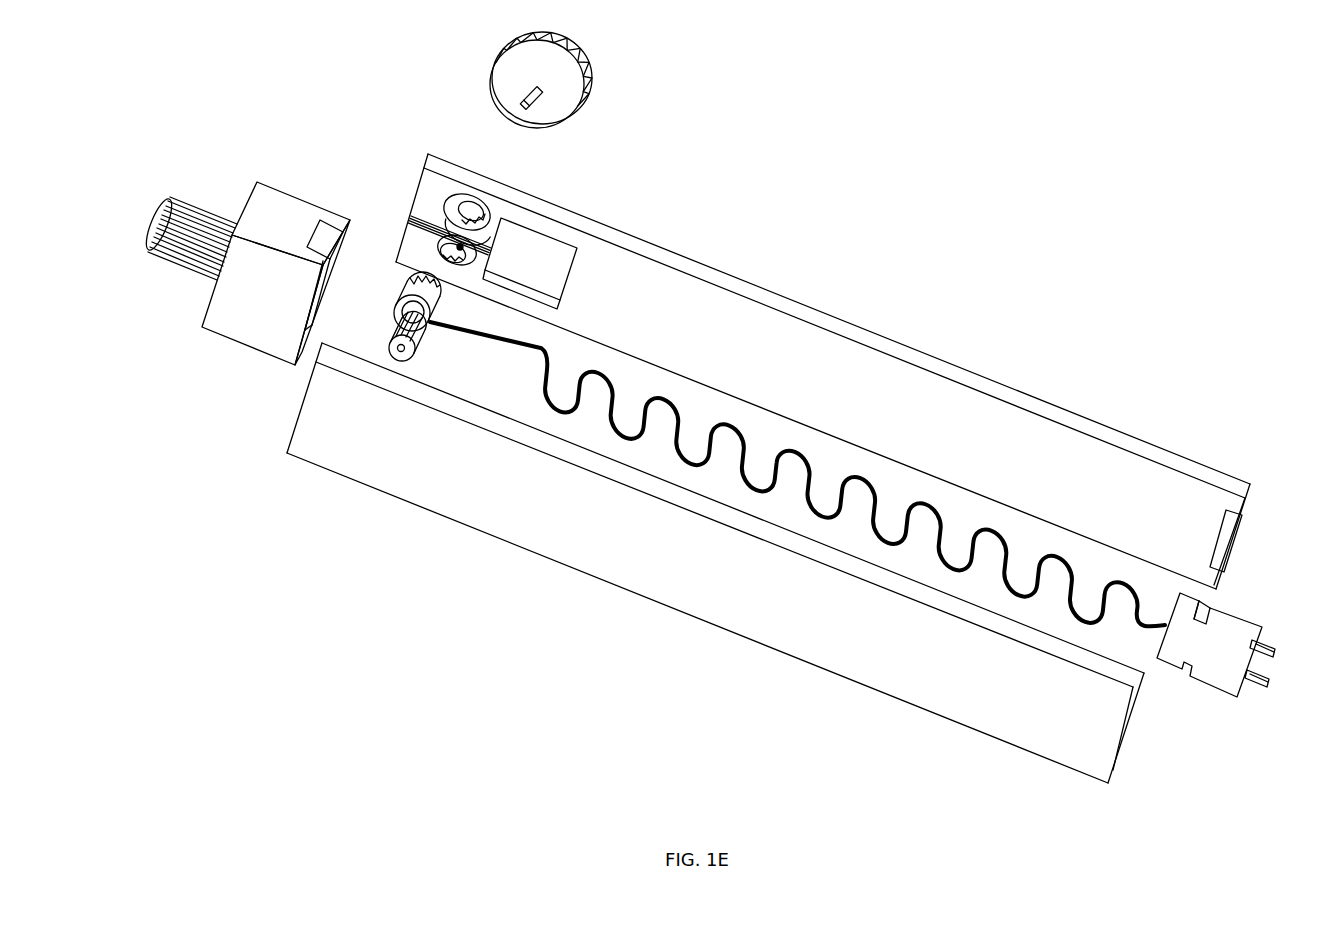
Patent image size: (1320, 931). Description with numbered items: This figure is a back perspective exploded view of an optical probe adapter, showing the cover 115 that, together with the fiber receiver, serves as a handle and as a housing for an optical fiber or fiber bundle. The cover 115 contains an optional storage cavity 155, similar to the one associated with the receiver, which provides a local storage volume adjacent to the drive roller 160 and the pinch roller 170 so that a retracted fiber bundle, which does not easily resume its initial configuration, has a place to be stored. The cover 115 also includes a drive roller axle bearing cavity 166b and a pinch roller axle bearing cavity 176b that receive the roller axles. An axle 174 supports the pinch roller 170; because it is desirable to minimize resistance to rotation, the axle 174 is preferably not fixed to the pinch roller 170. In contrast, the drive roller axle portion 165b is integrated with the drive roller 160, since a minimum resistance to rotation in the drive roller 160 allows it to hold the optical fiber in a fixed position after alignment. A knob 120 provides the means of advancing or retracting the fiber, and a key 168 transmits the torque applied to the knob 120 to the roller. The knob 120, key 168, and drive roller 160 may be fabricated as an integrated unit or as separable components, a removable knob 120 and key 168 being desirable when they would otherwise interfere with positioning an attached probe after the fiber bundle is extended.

The cover 115 is at (805, 307).
The knob 120 is at (543, 112).
The storage cavity 155 is at (522, 272).
The drive roller 160 is at (438, 322).
The drive roller axle portion 165b is at (410, 313).
The drive roller axle bearing cavity 166b is at (462, 258).
The key 168 is at (527, 107).
The pinch roller 170 is at (409, 353).
The axle 174 is at (399, 348).
The pinch roller axle bearing cavity 176b is at (447, 209).